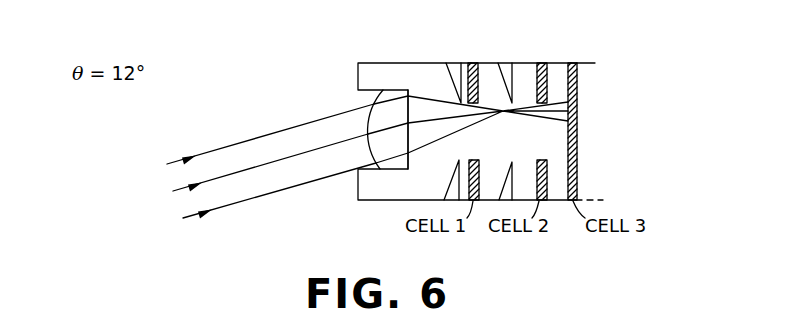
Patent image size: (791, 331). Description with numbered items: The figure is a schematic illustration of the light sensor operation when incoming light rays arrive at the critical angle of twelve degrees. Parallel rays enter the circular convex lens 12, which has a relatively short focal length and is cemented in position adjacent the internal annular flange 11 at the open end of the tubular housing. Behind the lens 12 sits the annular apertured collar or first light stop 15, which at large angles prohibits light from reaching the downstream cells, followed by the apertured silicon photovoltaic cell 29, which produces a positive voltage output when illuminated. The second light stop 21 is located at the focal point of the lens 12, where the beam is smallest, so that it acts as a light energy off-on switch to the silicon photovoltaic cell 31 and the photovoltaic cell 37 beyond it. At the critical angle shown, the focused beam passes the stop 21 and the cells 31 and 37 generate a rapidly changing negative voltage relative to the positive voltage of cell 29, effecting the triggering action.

The internal annular flange 11 is at (362, 78).
The circular convex lens 12 is at (395, 107).
The first light stop 15 is at (453, 63).
The silicon photovoltaic cell 29 is at (473, 63).
The second light stop 21 is at (507, 63).
The silicon photovoltaic cell 31 is at (540, 63).
The photovoltaic cell 37 is at (577, 91).